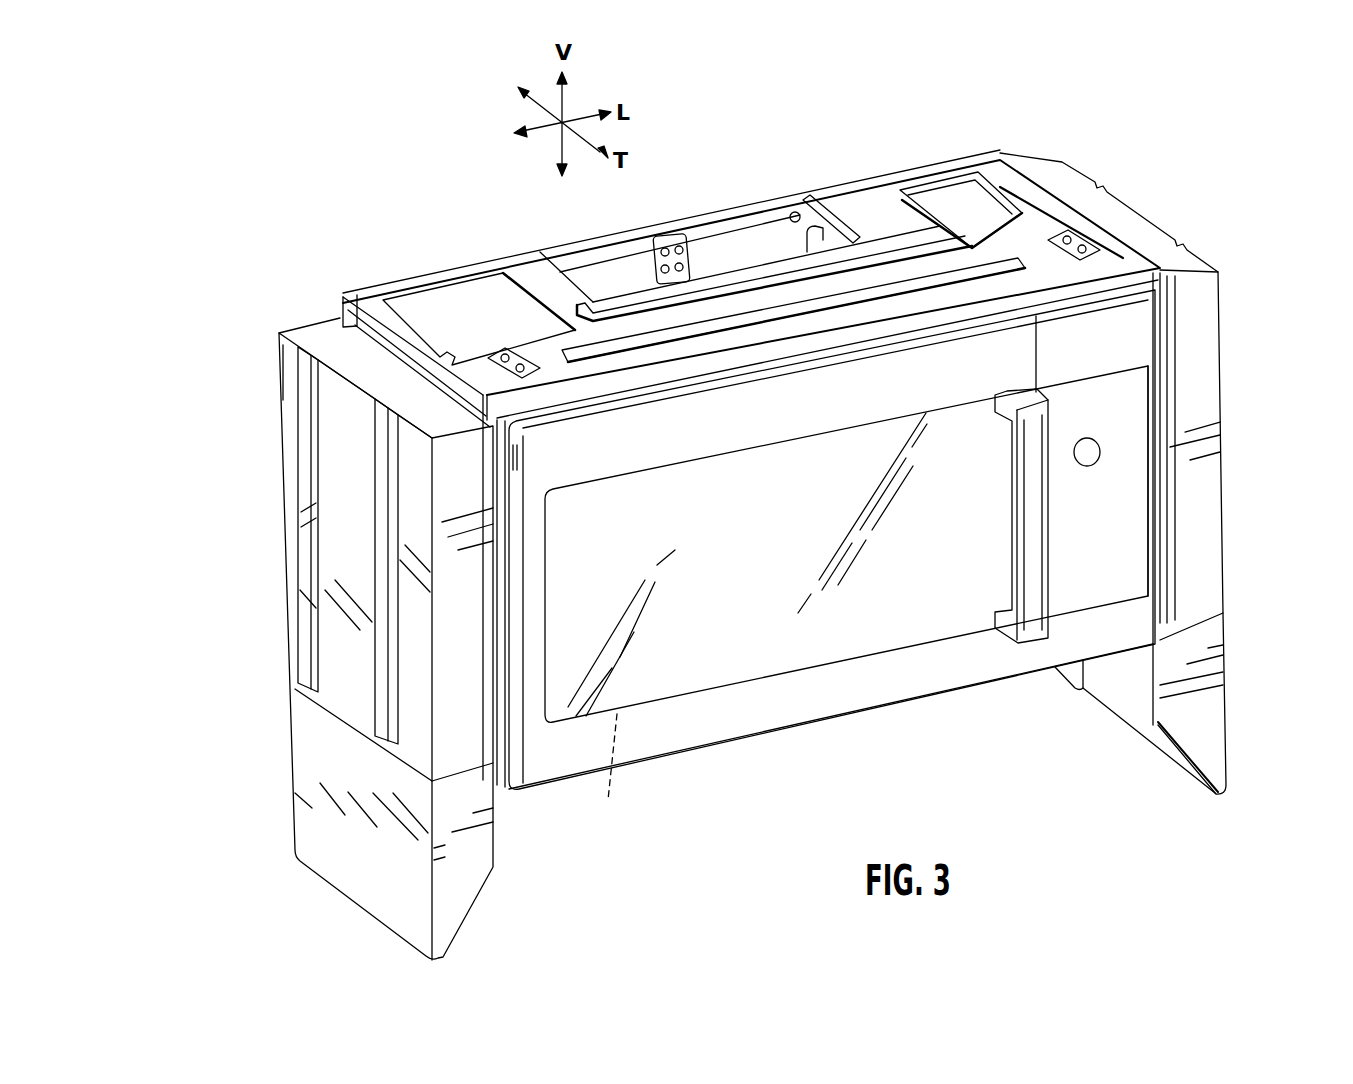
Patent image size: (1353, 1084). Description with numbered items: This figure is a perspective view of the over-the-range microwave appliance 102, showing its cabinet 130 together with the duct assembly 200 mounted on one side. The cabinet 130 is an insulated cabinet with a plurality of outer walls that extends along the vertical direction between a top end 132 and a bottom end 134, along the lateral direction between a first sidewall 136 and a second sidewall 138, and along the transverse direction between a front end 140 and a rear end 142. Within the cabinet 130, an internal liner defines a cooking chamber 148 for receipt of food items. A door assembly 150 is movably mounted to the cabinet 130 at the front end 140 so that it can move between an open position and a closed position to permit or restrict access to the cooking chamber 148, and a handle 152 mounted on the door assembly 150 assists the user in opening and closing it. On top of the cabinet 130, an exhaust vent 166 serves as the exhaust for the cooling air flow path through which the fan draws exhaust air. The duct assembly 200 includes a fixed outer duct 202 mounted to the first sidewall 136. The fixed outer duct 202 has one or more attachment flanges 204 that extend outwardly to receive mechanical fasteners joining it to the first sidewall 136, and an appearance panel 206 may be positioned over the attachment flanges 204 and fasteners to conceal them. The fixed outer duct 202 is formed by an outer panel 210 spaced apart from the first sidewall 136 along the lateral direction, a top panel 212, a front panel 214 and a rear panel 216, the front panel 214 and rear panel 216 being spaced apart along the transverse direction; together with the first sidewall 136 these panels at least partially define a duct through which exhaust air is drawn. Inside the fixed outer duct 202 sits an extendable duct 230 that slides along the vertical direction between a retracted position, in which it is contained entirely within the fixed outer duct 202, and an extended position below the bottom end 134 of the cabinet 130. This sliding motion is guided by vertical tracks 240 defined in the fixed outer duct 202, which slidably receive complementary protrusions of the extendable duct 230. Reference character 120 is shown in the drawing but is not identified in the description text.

The microwave appliance 102 is at (290, 200).
The door 120 is at (1132, 482).
The cabinet 130 is at (880, 230).
The top end 132 is at (938, 190).
The bottom end 134 is at (715, 748).
The first sidewall 136 is at (428, 355).
The second sidewall 138 is at (1010, 165).
The front end 140 is at (857, 698).
The rear end 142 is at (806, 190).
The cooking chamber 148 is at (620, 774).
The door assembly 150 is at (795, 713).
The handle 152 is at (1030, 623).
The exhaust vent 166 is at (723, 243).
The duct assembly 200 is at (232, 634).
The fixed outer duct 202 is at (335, 466).
The attachment flange 204 is at (345, 320).
The appearance panel 206 is at (465, 760).
The outer panel 210 is at (328, 545).
The top panel 212 is at (355, 371).
The front panel 214 is at (455, 428).
The rear panel 216 is at (294, 328).
The extendable duct 230 is at (340, 815).
The vertical track 240 is at (312, 650).